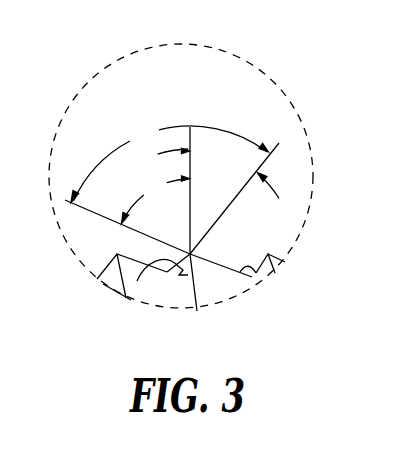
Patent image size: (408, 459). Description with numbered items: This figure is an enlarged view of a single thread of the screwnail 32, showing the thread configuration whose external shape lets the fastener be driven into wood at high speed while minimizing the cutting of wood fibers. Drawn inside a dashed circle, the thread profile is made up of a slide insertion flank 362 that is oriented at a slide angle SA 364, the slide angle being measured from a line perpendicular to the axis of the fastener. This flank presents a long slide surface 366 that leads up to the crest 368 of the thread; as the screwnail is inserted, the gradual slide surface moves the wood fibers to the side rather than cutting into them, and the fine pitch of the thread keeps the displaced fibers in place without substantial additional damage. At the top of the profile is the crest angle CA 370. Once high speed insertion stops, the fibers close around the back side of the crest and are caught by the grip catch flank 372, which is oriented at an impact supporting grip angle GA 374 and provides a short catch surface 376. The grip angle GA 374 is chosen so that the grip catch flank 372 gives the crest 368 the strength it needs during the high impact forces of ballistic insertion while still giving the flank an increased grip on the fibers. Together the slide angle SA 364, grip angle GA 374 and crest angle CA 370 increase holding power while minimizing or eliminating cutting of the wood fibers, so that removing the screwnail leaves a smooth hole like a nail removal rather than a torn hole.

The blade 32 is at (0, 330).
The slide insertion flank 362 is at (226, 266).
The slide angle SA 364 is at (67, 203).
The long slide surface 366 is at (252, 277).
The crest 368 is at (186, 275).
The crest angle CA 370 is at (152, 128).
The grip catch flank 372 is at (158, 262).
The grip angle GA 374 is at (229, 151).
The short catch surface 376 is at (262, 256).